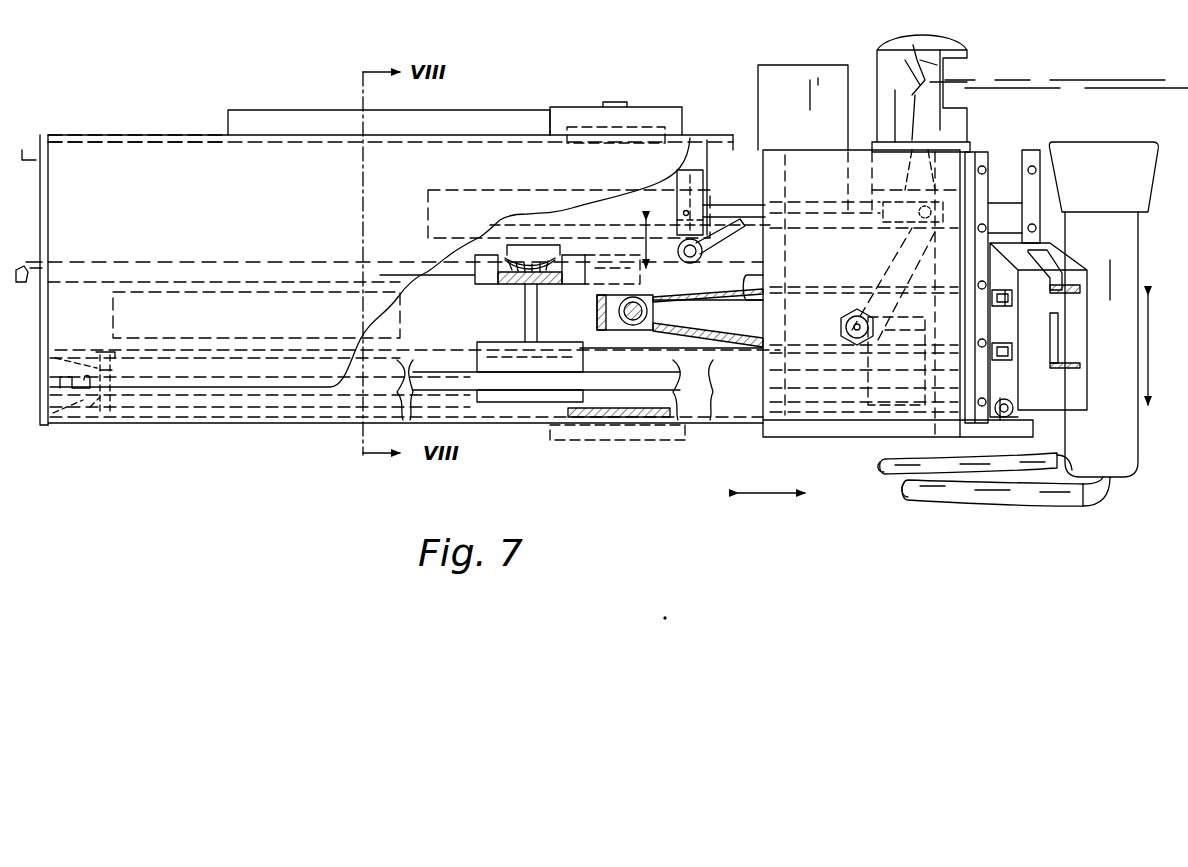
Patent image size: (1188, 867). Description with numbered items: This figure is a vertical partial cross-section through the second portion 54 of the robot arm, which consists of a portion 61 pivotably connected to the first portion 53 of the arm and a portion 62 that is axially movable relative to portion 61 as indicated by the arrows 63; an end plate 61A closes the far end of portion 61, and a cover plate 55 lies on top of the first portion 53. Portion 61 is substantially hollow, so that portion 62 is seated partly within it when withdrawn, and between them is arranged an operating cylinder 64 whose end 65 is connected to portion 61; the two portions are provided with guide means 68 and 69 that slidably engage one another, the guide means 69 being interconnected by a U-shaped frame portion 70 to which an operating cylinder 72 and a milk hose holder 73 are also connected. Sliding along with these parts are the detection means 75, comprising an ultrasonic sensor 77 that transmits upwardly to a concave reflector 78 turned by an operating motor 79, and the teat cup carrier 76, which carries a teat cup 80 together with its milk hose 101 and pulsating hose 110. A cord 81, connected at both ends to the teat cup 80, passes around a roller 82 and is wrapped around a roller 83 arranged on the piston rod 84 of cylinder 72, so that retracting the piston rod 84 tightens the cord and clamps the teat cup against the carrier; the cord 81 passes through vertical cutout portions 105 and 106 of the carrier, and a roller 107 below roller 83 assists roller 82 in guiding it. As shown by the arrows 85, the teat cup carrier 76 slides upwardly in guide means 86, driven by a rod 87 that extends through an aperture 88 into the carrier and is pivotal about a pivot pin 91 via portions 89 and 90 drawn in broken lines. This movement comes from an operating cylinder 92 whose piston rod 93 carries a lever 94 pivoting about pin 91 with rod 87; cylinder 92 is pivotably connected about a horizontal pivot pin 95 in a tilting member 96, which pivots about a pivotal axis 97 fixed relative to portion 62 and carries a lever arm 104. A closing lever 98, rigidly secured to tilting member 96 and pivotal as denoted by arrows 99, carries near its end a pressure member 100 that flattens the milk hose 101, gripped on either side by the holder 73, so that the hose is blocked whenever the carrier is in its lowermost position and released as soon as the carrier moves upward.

The first portion of robot arm 53 is at (492, 110).
The second portion of robot arm 54 is at (92, 148).
The cover plate 55 is at (628, 103).
The portion of robot arm 61 is at (168, 160).
The end plate 61A is at (25, 273).
The axially movable portion 62 is at (1063, 138).
The arrows 63 is at (771, 477).
The operating cylinder 64 is at (447, 368).
The end of operating cylinder 65 is at (108, 354).
The guide means 68 is at (700, 402).
The guide means 69 is at (497, 390).
The U-shaped frame portion 70 is at (530, 402).
The operating cylinder 72 is at (113, 306).
The milk hose holder 73 is at (487, 258).
The detection means 75 is at (953, 48).
The teat cup carrier 76 is at (1062, 405).
The ultrasonic sensor 77 is at (960, 140).
The concave reflector 78 is at (912, 34).
The operating motor 79 is at (773, 70).
The teat cup 80 is at (1110, 154).
The cord 81 is at (1087, 284).
The roller 82 is at (650, 315).
The roller 83 is at (1010, 300).
The piston rod 84 is at (588, 320).
The arrows 85 is at (1161, 350).
The guide means 86 is at (985, 164).
The rod 87 is at (1006, 418).
The aperture 88 is at (1016, 403).
The portion 89 is at (935, 438).
The portion 90 is at (928, 297).
The pivot pin 91 is at (855, 316).
The operating cylinder 92 is at (452, 190).
The piston rod 93 is at (800, 202).
The lever 94 is at (888, 252).
The horizontal pivot pin 95 is at (680, 208).
The tilting member 96 is at (700, 172).
The pivotal axis 97 is at (685, 263).
The closing lever 98 is at (562, 255).
The arrows 99 is at (661, 237).
The pressure member 100 is at (528, 262).
The milk hose 101 is at (142, 264).
The lever arm 104 is at (716, 240).
The cutout portion 105 is at (1035, 352).
The cutout portion 106 is at (1062, 268).
The roller 107 is at (1080, 355).
The pulsating hose 110 is at (884, 466).